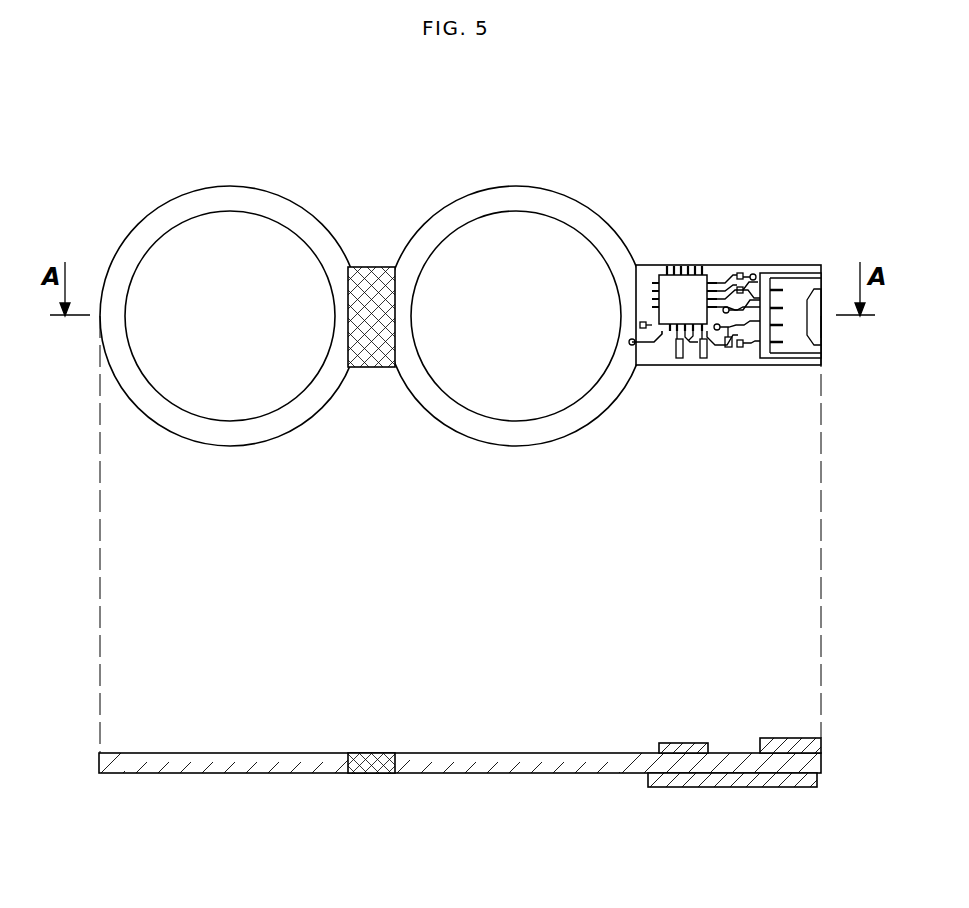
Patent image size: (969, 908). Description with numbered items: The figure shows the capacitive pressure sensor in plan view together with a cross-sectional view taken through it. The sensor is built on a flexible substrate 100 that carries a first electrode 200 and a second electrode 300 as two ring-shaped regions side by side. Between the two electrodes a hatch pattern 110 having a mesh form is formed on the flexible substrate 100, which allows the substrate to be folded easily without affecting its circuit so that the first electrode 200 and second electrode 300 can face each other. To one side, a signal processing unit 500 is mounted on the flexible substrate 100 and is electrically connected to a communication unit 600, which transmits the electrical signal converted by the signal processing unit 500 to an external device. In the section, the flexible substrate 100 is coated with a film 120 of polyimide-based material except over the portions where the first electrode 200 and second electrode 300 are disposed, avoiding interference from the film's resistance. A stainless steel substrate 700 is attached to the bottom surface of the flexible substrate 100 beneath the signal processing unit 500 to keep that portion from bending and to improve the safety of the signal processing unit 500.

The flexible substrate 100 is at (524, 196).
The hatch pattern 110 is at (377, 288).
The film 120 is at (113, 770).
The first electrode 200 is at (210, 253).
The second electrode 300 is at (485, 380).
The signal processing unit 500 is at (683, 287).
The communication unit 600 is at (792, 275).
The stainless steel substrate 700 is at (730, 785).